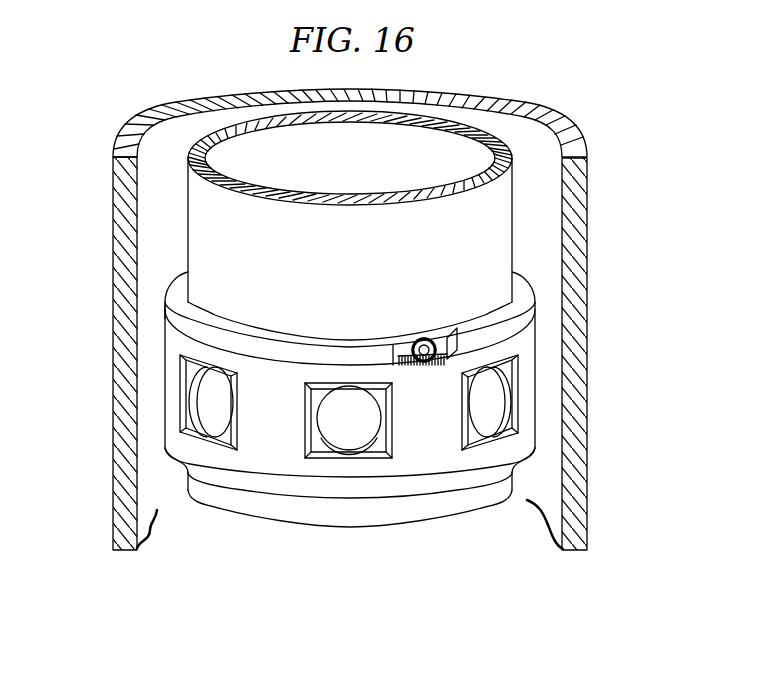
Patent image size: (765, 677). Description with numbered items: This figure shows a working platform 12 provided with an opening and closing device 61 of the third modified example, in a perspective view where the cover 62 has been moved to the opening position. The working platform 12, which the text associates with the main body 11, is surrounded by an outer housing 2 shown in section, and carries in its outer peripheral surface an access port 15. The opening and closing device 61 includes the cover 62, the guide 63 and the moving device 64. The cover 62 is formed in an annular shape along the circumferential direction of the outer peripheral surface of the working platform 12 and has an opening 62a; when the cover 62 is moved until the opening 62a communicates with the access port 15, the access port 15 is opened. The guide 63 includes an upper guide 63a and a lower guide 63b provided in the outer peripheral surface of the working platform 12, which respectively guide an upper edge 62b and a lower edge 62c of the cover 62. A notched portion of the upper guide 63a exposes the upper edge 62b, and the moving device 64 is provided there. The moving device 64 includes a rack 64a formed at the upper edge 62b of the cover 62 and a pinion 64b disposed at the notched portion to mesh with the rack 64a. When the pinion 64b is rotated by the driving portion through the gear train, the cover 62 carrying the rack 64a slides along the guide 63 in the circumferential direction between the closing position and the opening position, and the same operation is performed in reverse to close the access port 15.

The housing / outer tube 2 is at (125, 303).
The main body 11 is at (503, 207).
The working platform 12 is at (458, 206).
The access port 15 is at (505, 400).
The opening and closing device 61 is at (331, 414).
The cover 62 is at (286, 437).
The opening 62a is at (191, 392).
The upper edge 62b is at (330, 365).
The lower edge 62c is at (270, 473).
The guide 63 is at (337, 411).
The upper guide 63a is at (288, 336).
The lower guide 63b is at (172, 500).
The moving device 64 is at (421, 288).
The rack 64a is at (405, 352).
The pinion 64b is at (452, 334).